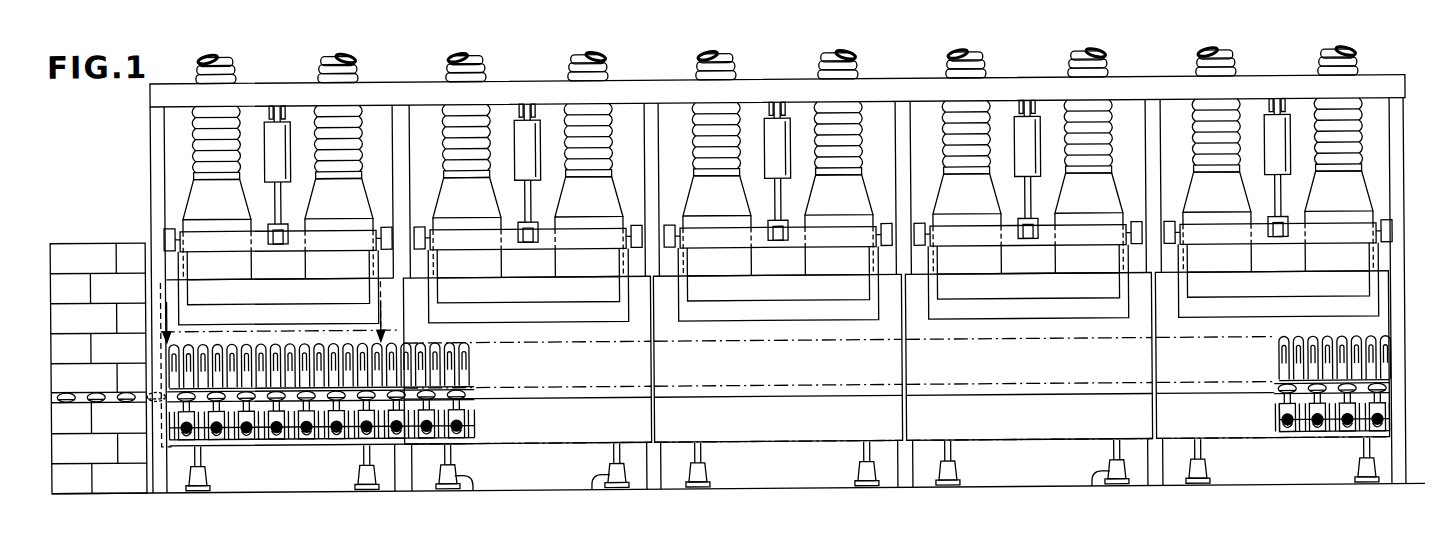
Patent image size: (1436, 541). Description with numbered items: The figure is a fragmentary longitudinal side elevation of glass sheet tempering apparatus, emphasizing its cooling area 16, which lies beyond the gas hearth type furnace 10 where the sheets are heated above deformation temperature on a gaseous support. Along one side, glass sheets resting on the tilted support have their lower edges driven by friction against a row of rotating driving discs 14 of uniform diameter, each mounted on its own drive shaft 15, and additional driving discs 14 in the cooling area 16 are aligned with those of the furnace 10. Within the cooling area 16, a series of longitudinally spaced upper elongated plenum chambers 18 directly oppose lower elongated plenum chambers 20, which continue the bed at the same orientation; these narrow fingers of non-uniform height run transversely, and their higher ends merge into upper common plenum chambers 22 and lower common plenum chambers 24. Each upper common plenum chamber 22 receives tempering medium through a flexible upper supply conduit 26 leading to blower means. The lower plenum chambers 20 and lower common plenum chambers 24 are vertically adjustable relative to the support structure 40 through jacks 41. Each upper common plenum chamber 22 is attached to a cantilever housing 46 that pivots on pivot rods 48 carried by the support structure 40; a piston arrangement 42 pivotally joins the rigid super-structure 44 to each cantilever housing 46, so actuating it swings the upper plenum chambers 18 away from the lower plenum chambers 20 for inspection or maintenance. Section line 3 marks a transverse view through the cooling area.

The section line 3- 3 is at (279, 311).
The gas hearth type furnace 10 is at (102, 237).
The rotating driving discs 14 is at (114, 395).
The drive shaft 15 is at (248, 410).
The cooling area 16 is at (326, 42).
The upper elongated plenum chambers 18 is at (477, 355).
The lower elongated plenum chambers 20 is at (478, 404).
The upper common plenum chamber 22 is at (290, 307).
The lower common plenum chamber 24 is at (600, 439).
The flexible upper supply conduits 26 is at (318, 62).
The support structure 40 is at (358, 501).
The jacks 41 is at (784, 495).
The piston arrangement 42 is at (287, 152).
The rigid super-structure 44 is at (636, 84).
The cantilever housing 46 is at (797, 231).
The pivot rods 48 is at (385, 229).